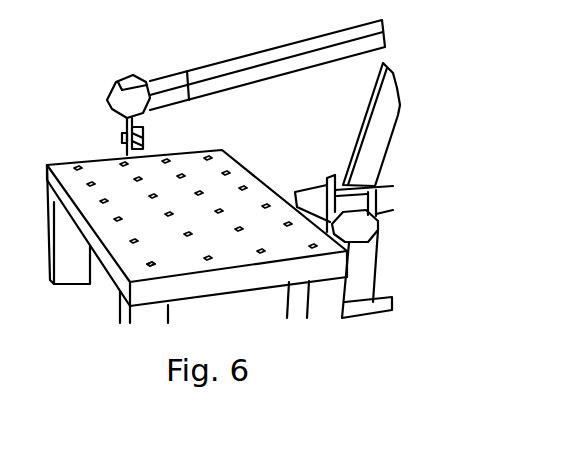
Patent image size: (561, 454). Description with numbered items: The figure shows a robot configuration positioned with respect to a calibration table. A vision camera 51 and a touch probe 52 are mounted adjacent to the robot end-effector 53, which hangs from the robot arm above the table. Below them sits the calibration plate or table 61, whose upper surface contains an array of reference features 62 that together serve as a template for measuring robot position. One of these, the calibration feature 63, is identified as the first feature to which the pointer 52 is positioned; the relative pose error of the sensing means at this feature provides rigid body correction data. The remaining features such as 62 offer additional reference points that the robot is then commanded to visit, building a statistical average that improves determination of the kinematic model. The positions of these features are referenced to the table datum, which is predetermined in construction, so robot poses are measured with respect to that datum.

The vision camera 51 is at (143, 137).
The touch probe 52 is at (125, 148).
The robot end-effector 53 is at (122, 125).
The calibration table 61 is at (236, 164).
The reference feature 62 is at (272, 208).
The calibration feature 63 is at (148, 264).